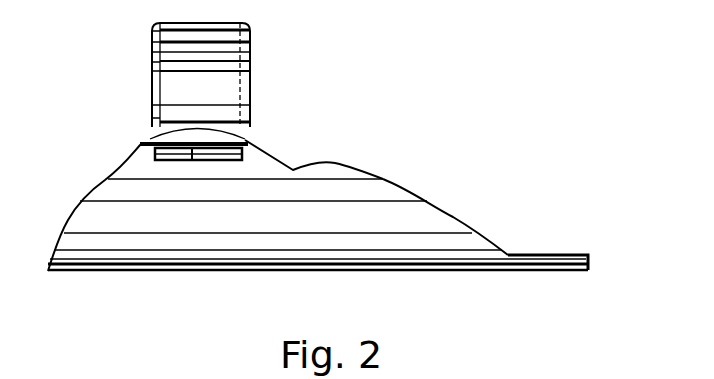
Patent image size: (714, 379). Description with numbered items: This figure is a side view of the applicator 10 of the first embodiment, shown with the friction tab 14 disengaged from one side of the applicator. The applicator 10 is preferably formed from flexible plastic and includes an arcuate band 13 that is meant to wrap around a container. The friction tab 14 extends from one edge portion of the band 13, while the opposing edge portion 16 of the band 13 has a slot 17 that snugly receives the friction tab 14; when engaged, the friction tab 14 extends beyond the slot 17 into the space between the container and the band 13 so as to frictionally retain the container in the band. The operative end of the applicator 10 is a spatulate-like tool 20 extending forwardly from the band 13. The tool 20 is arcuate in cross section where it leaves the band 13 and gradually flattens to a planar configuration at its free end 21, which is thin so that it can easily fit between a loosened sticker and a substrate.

The applicator 10 is at (330, 167).
The arcuate band 13 is at (260, 222).
The friction tab 14 is at (195, 86).
The opposing edge portion 16 is at (258, 170).
The slot 17 is at (192, 152).
The spatulate-like tool 20 is at (434, 225).
The free end 21 is at (592, 258).